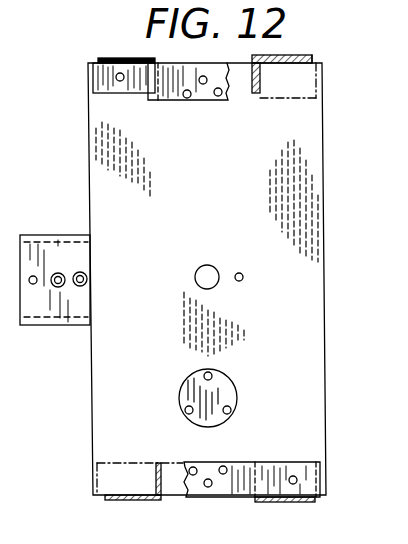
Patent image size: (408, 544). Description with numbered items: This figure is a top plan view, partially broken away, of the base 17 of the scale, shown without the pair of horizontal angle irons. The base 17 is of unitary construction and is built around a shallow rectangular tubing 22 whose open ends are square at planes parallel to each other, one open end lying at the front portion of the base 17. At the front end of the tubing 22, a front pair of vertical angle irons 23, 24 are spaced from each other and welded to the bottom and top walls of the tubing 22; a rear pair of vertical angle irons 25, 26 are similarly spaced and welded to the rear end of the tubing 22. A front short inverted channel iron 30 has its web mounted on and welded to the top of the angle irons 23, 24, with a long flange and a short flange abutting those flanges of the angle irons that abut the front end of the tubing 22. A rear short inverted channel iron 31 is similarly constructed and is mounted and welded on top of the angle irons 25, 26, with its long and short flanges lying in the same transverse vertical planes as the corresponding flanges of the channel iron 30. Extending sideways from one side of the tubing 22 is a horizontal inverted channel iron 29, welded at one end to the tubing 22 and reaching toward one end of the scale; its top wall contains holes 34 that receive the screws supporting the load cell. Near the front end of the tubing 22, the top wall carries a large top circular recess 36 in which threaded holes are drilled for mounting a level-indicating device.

The base 17 is at (332, 58).
The shallow rectangular tubing 22 is at (322, 188).
The front vertical angle iron 23 is at (127, 502).
The front vertical angle iron 24 is at (280, 502).
The rear vertical angle iron 25 is at (115, 56).
The rear vertical angle iron 26 is at (262, 77).
The horizontal inverted channel iron 29 is at (51, 235).
The front short inverted channel iron 30 is at (237, 462).
The rear short inverted channel iron 31 is at (177, 102).
The holes 34 is at (63, 274).
The top circular recess 36 is at (233, 392).